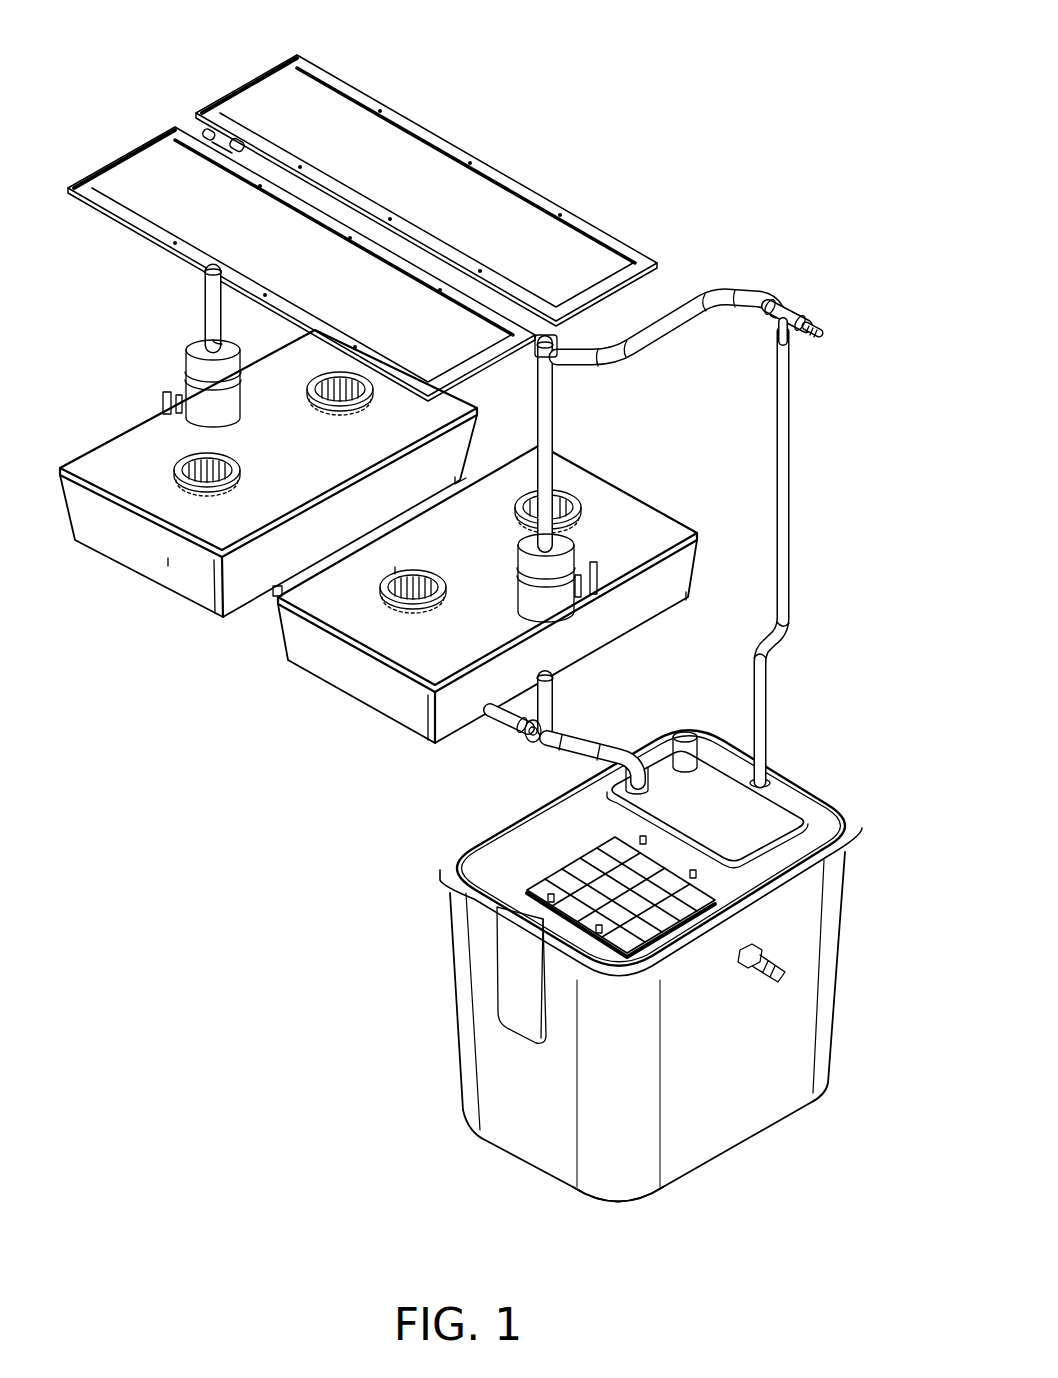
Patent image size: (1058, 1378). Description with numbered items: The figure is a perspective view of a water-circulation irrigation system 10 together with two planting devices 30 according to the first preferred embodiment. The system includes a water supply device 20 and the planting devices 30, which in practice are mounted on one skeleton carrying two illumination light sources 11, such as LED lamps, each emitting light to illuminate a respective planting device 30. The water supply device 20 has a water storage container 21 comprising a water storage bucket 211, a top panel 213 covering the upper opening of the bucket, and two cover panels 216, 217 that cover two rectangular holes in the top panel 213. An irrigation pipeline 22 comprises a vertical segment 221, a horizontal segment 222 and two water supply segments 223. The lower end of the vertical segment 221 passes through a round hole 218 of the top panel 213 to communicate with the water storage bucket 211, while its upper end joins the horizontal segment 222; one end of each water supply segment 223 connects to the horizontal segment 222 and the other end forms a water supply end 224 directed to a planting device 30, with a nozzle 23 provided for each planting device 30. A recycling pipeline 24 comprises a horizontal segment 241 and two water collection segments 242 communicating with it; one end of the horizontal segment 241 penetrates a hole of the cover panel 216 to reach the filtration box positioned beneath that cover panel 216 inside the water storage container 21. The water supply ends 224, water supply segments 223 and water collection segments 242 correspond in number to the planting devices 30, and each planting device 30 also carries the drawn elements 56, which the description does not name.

The water-circulation irrigation system 10 is at (655, 88).
The illumination light source 11 is at (245, 90).
The water supply device 20 is at (626, 970).
The water storage container 21 is at (860, 1005).
The water storage bucket 211 is at (727, 1125).
The top panel 213 is at (490, 862).
The cover panel 216 is at (782, 815).
The cover panel 217 is at (560, 895).
The round hole 218 is at (772, 775).
The irrigation pipeline 22 is at (805, 300).
The vertical segment 221 is at (786, 482).
The horizontal segment 222 is at (698, 296).
The water supply segment 223 is at (210, 290).
The water supply end 224 is at (186, 348).
The nozzle 23 is at (475, 465).
The recycling pipeline 24 is at (494, 763).
The horizontal segment 241 is at (282, 594).
The water collection segment 242 is at (543, 705).
The planting device 30 is at (660, 494).
The planting cup 56 is at (308, 400).